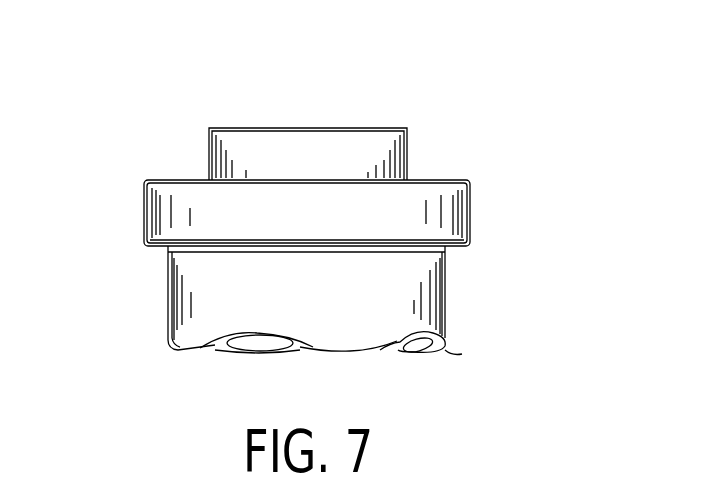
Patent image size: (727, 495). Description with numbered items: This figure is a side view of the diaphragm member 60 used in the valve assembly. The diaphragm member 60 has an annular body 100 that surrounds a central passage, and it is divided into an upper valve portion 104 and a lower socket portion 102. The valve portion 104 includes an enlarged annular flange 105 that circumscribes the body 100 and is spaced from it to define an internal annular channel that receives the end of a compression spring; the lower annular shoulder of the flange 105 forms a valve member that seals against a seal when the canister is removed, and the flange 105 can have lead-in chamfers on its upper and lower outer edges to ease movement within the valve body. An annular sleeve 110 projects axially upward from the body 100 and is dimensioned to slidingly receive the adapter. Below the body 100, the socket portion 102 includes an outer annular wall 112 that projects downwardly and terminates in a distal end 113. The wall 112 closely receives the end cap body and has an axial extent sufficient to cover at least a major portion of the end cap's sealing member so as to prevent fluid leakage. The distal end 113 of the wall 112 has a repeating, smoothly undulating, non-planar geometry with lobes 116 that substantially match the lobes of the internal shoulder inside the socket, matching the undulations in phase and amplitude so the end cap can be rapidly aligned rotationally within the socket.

The diaphragm member 60 is at (303, 217).
The annular body 100 is at (303, 213).
The socket portion 102 is at (437, 368).
The valve portion 104 is at (320, 118).
The annular flange 105 is at (152, 205).
The annular sleeve 110 is at (408, 152).
The outer annular wall 112 is at (446, 302).
The distal end 113 is at (287, 353).
The lobes 116 is at (247, 355).